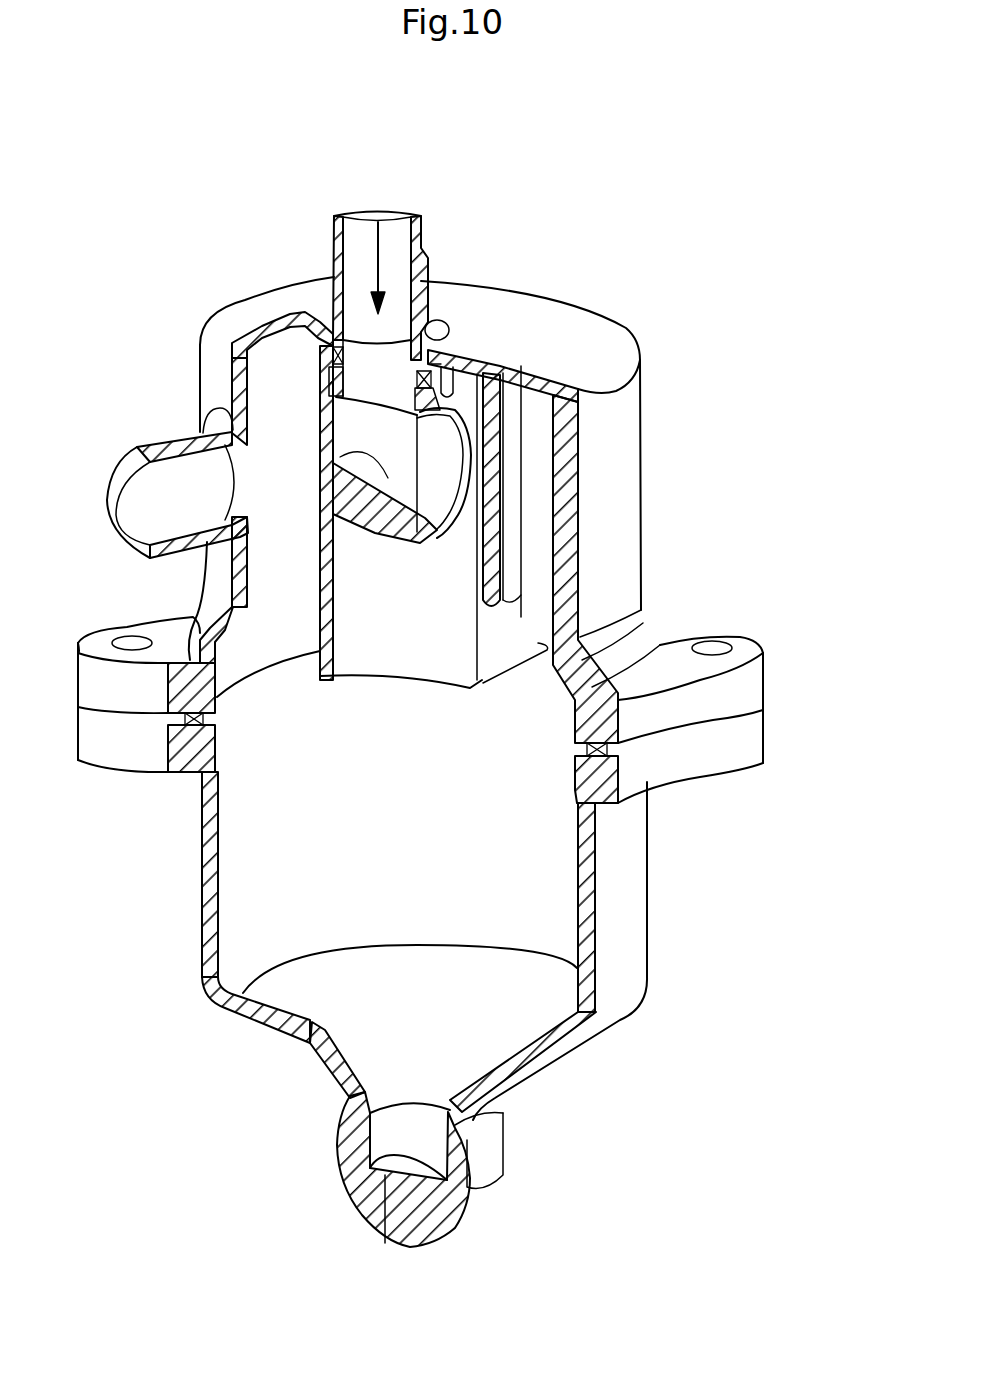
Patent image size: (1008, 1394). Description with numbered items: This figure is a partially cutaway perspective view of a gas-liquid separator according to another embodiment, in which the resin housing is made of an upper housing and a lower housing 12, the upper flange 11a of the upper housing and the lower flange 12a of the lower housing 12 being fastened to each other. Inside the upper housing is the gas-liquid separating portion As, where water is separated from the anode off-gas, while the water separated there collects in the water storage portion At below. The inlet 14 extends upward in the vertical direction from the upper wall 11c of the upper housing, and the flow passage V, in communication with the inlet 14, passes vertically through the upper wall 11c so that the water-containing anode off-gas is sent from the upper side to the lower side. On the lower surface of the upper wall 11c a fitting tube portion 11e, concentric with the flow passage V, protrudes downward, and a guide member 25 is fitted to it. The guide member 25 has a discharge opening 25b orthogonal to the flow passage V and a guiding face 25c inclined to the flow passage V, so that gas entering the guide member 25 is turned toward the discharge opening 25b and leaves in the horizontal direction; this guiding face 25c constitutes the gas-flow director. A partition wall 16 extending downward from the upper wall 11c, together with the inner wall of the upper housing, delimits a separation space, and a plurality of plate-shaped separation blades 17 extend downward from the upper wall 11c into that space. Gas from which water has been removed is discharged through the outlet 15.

The inlet 14 is at (413, 220).
The flow passage V is at (380, 257).
The upper wall 11c is at (542, 320).
The fitting tube portion 11e is at (460, 378).
The outlet 15 is at (135, 450).
The guide member 25 is at (370, 545).
The guiding face 25c is at (413, 463).
The discharge opening 25b is at (455, 537).
The separation blades 17 is at (493, 505).
The partition wall 16 is at (320, 610).
The gas-liquid separating portion As is at (526, 630).
The upper flange 11a is at (752, 687).
The lower flange 12a is at (757, 740).
The lower housing 12 is at (630, 882).
The water storage portion At is at (305, 915).